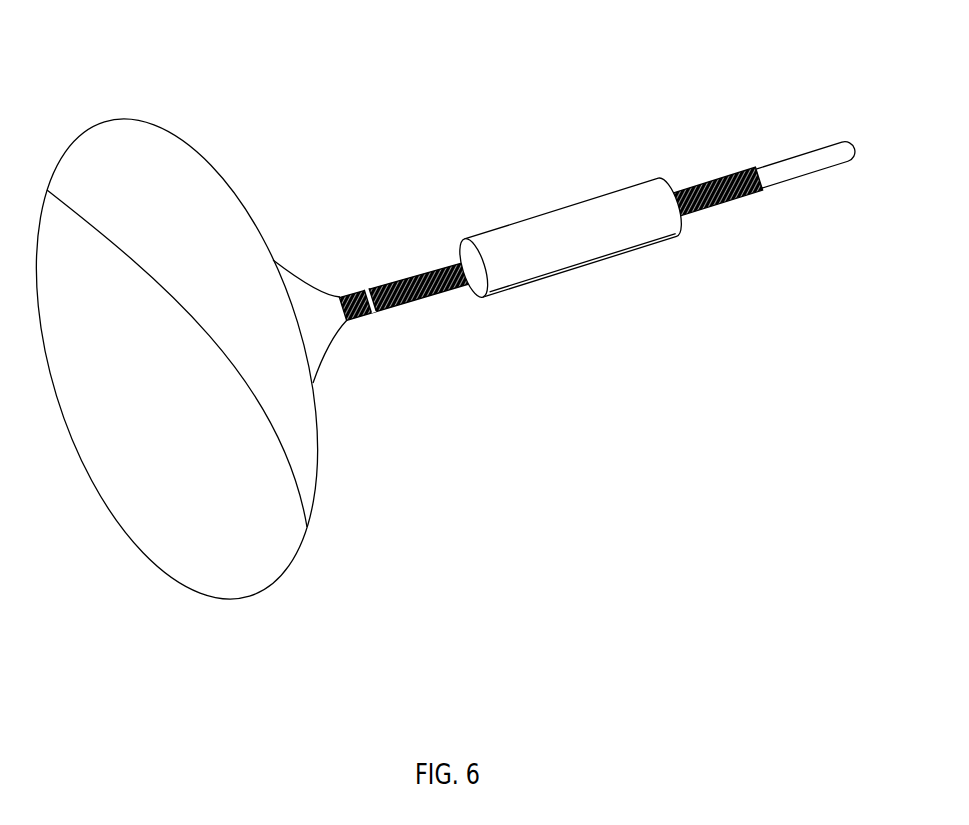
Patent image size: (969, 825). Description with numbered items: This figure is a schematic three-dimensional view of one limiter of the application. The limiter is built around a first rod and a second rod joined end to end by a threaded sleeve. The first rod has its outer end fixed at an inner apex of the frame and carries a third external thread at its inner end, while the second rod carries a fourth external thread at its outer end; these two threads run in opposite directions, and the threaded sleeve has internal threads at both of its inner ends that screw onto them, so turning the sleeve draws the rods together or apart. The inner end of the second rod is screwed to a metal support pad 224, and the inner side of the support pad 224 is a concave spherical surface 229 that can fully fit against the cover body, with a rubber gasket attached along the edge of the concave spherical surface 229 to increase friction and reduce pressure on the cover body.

The support pad 224 is at (203, 158).
The concave spherical surface 229 is at (215, 512).